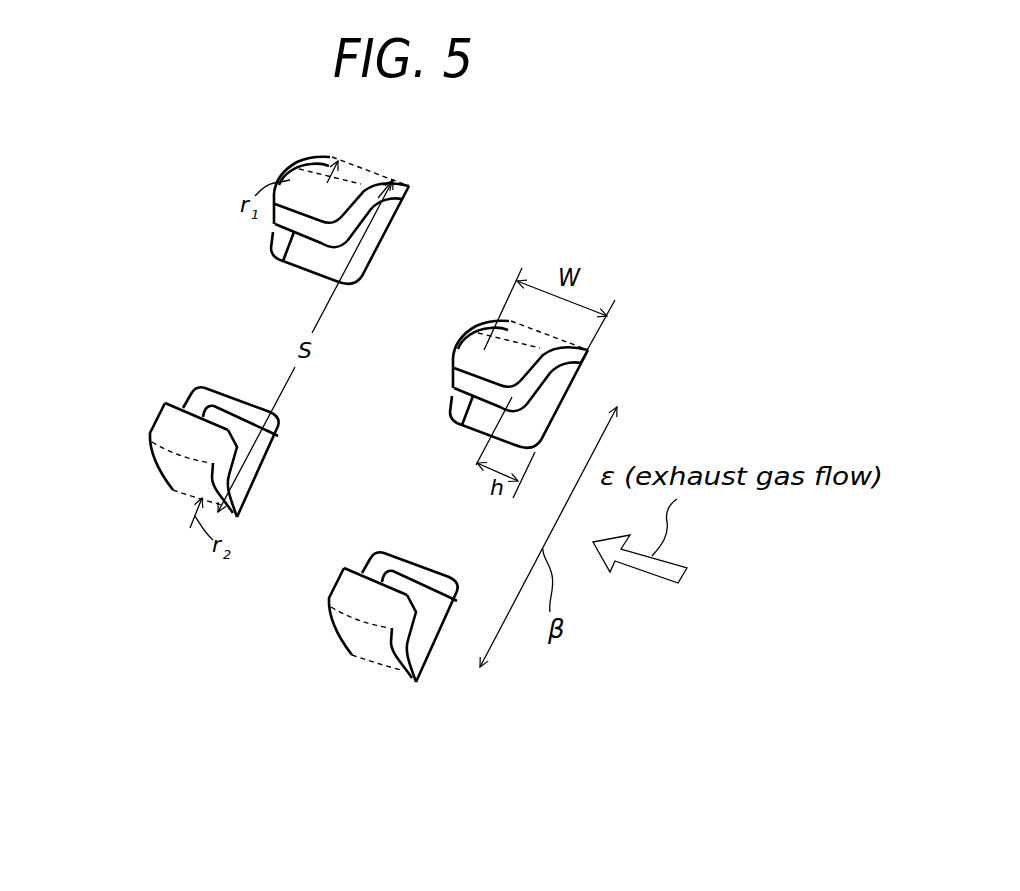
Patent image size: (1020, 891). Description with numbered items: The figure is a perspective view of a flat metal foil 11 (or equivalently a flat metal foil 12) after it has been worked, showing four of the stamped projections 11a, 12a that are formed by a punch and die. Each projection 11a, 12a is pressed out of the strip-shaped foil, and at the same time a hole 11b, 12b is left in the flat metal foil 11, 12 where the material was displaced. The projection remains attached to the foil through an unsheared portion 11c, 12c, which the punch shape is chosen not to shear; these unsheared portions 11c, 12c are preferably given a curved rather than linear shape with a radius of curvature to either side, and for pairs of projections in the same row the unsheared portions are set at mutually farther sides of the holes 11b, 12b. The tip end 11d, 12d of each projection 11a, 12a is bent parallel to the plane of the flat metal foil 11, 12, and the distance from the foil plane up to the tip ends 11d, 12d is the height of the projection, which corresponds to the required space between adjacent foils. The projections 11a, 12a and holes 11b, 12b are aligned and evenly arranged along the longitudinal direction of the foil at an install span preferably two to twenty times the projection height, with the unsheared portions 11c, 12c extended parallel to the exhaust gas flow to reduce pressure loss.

The flat metal foil 11 is at (412, 418).
The flat metal foil 12 is at (412, 418).
The projection 11a is at (446, 418).
The projection 12a is at (313, 159).
The hole 11b is at (364, 434).
The hole 12b is at (281, 250).
The unsheared portion 11c is at (409, 423).
The unsheared portion 12c is at (371, 169).
The tip end 11d is at (326, 386).
The tip end 12d is at (506, 320).